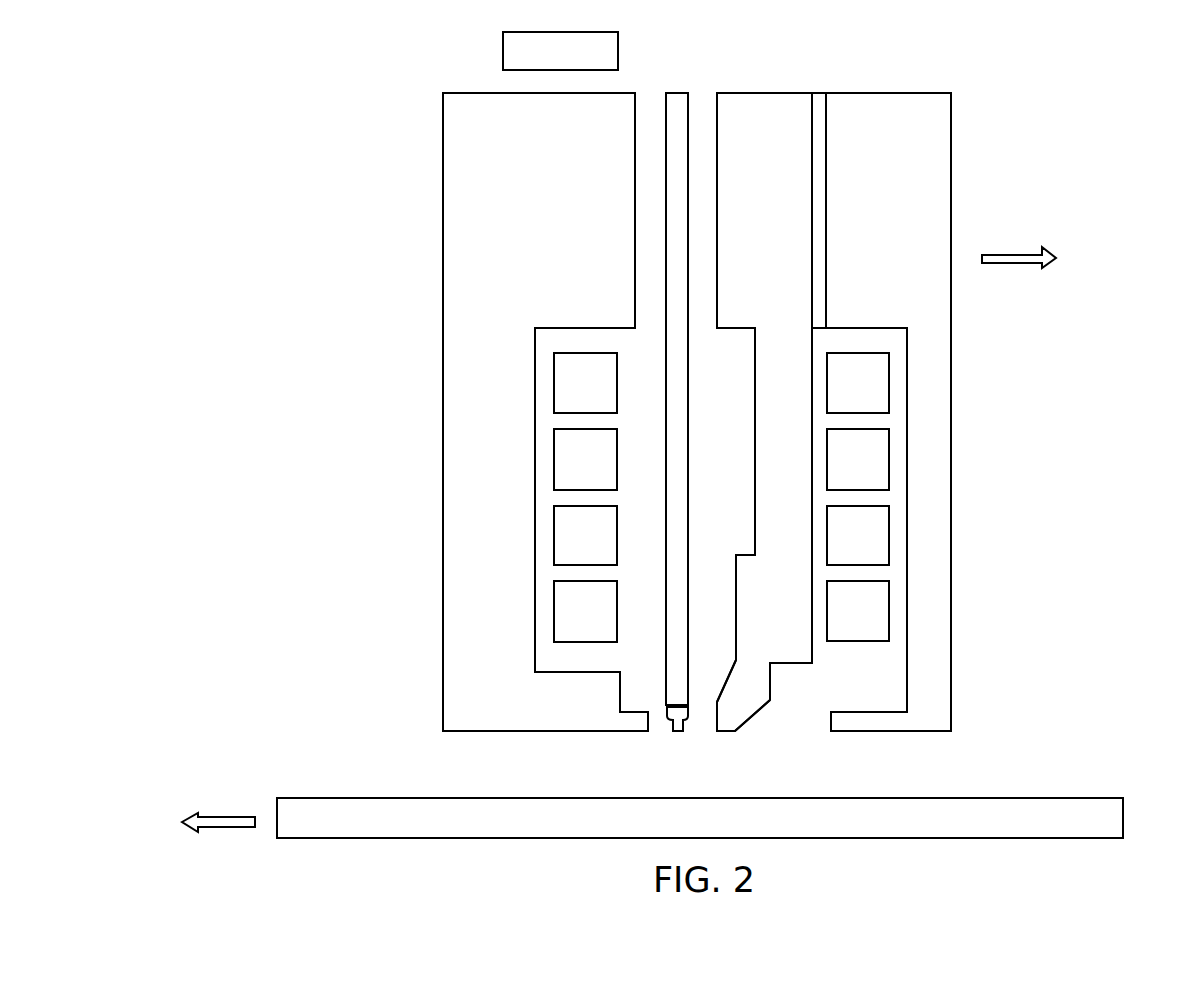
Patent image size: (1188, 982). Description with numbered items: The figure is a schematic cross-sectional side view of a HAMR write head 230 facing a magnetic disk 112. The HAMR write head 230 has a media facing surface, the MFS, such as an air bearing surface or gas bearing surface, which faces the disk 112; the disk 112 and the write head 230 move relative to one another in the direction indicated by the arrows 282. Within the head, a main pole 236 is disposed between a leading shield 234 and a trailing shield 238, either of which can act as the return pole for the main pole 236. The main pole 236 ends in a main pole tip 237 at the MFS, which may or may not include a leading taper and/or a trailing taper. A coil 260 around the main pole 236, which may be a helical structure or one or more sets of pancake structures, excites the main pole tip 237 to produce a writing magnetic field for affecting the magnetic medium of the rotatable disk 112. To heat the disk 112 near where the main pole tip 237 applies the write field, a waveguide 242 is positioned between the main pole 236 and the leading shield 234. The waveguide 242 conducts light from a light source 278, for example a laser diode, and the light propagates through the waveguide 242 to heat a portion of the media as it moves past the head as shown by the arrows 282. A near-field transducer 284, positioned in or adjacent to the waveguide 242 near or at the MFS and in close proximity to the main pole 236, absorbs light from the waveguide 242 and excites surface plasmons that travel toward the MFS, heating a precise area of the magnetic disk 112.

The HAMR write head 230 is at (280, 189).
The leading shield 234 is at (463, 491).
The main pole 236 is at (762, 486).
The main pole tip 237 is at (727, 703).
The trailing shield 238 is at (910, 486).
The waveguide 242 is at (677, 207).
The coil 260 is at (566, 394).
The light source 278 is at (677, 91).
The arrows 282 is at (1018, 268).
The near-field transducer (NFT) 284 is at (667, 710).
The magnetic disk 112 is at (681, 832).
The media facing surface MFS is at (888, 732).